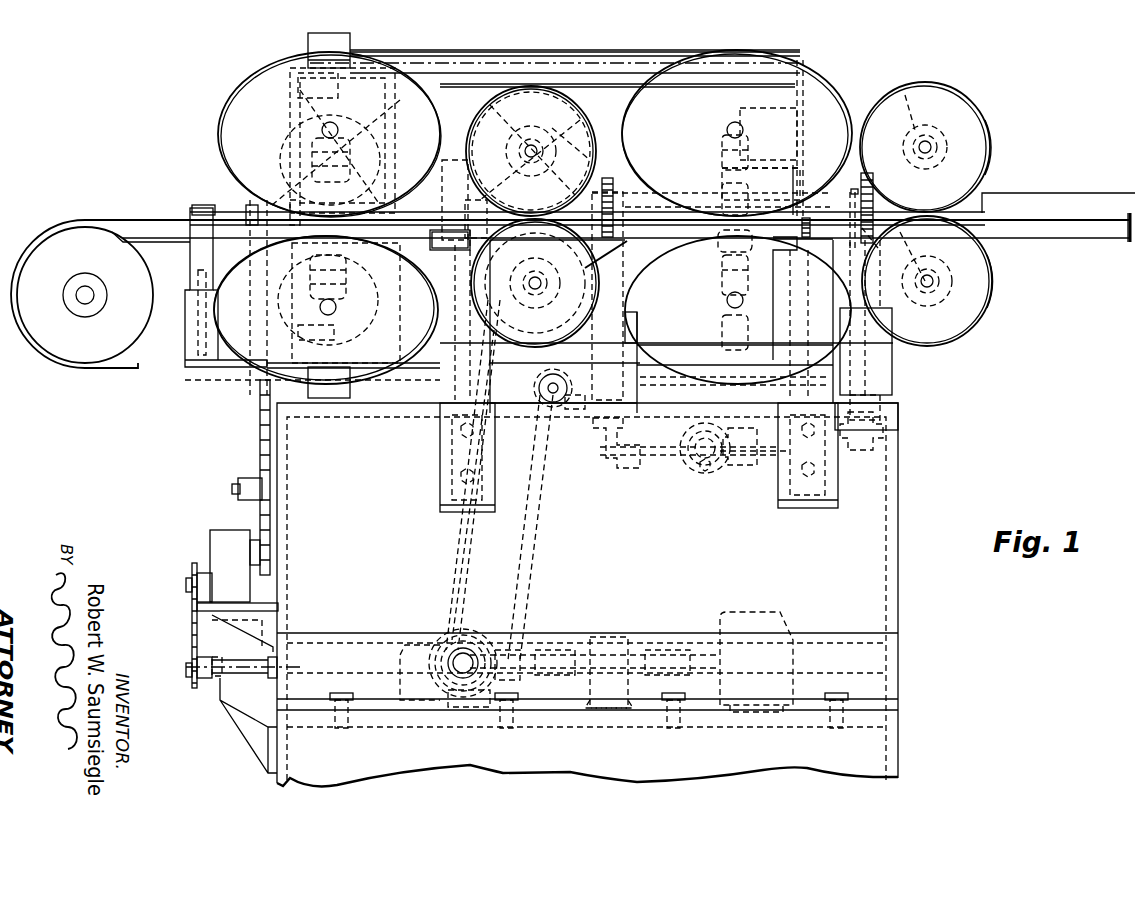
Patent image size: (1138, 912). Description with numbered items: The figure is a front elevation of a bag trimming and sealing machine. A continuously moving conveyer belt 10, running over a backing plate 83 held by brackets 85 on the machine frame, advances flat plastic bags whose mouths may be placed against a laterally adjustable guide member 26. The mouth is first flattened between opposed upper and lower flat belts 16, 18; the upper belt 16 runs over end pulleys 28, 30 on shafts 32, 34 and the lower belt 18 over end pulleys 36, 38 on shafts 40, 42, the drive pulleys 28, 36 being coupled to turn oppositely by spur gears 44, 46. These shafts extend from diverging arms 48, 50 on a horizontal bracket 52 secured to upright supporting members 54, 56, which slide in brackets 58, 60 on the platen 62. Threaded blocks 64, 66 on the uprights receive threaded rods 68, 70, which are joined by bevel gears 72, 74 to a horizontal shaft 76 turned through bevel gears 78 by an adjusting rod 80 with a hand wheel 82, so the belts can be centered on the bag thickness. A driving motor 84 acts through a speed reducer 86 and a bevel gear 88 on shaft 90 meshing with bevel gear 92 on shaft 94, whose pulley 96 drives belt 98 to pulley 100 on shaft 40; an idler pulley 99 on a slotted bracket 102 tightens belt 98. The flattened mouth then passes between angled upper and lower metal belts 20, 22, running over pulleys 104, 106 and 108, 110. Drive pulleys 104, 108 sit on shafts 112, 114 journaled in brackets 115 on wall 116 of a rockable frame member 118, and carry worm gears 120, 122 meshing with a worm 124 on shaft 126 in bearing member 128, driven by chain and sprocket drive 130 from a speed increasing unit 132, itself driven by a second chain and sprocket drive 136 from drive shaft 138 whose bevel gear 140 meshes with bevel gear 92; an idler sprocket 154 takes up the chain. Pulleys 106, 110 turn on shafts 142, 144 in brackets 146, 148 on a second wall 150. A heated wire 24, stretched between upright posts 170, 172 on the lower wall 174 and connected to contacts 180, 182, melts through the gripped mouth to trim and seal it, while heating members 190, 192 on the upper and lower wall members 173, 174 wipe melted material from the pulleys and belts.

The conveyer belt 10 is at (1060, 242).
The upper flat belt 16 is at (992, 158).
The lower flat belt 18 is at (992, 268).
The upper metal belt 20 is at (670, 74).
The lower metal belt 22 is at (662, 372).
The heated wire 24 is at (235, 211).
The guide member 26 is at (1028, 195).
The end pulley 28 is at (495, 115).
The end pulley 30 is at (958, 100).
The shaft 32 is at (522, 147).
The shaft 34 is at (940, 143).
The end pulley 36 is at (602, 290).
The end pulley 38 is at (980, 308).
The shaft 40 is at (533, 293).
The shaft 42 is at (928, 290).
The spur gear 44 is at (450, 200).
The spur gear 46 is at (467, 211).
The diverging arm 48 is at (905, 95).
The diverging arm 50 is at (987, 298).
The bracket 52 is at (630, 200).
The upright supporting member 54 is at (628, 247).
The upright supporting member 56 is at (878, 248).
The bracket 58 is at (637, 330).
The bracket 60 is at (893, 375).
The platen 62 is at (723, 403).
The threaded block 64 is at (650, 190).
The threaded block 66 is at (874, 205).
The threaded rod 68 is at (610, 180).
The threaded rod 70 is at (830, 192).
The bevel gear 72 is at (610, 455).
The bevel gear 74 is at (890, 458).
The horizontal shaft 76 is at (755, 460).
The bevel gears 78 is at (700, 480).
The adjusting rod 80 is at (685, 465).
The hand wheel 82 is at (710, 478).
The backing plate 83 is at (1092, 243).
The driving motor 84 is at (758, 612).
The bracket 85 is at (448, 452).
The speed reducer 86 is at (608, 635).
The bevel gear 88 is at (474, 638).
The shaft 90 is at (520, 655).
The bevel gear 92 is at (473, 485).
The shaft 94 is at (460, 673).
The pulley 96 is at (468, 705).
The belt 98 is at (522, 540).
The idler pulley 99 is at (538, 390).
The pulley 100 is at (484, 475).
The slotted bracket 102 is at (572, 400).
The upper pulley 104 is at (257, 86).
The upper pulley 106 is at (790, 62).
The lower pulley 108 is at (240, 343).
The lower pulley 110 is at (773, 368).
The shaft 112 is at (338, 128).
The shaft 114 is at (338, 312).
The bracket 115 is at (338, 93).
The wall 116 is at (290, 125).
The frame member 118 is at (474, 68).
The worm gear 120 is at (377, 148).
The worm gear 122 is at (372, 290).
The worm 124 is at (378, 172).
The shaft 126 is at (252, 212).
The bearing member 128 is at (300, 212).
The chain and sprocket drive 130 is at (262, 413).
The speed increasing unit 132 is at (235, 535).
The second chain and sprocket drive 136 is at (192, 618).
The drive shaft 138 is at (252, 660).
The bevel gear 140 is at (448, 632).
The shaft 142 is at (728, 125).
The shaft 144 is at (728, 300).
The bracket 146 is at (795, 134).
The bracket 148 is at (722, 330).
The second wall 150 is at (795, 160).
The chain take-up idler sprocket 154 is at (250, 490).
The upright post 170 is at (195, 263).
The upright post 172 is at (352, 258).
The upper wall member 173 is at (418, 72).
The lower wall 174 is at (422, 369).
The contact 180 is at (200, 208).
The contact 182 is at (440, 218).
The upper heating member 190 is at (308, 50).
The lower heating member 192 is at (330, 398).